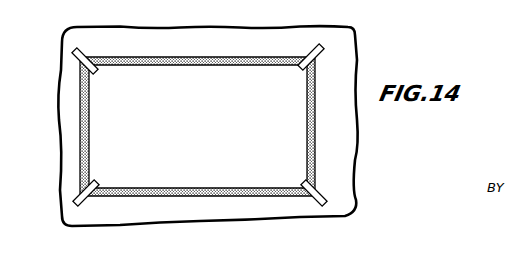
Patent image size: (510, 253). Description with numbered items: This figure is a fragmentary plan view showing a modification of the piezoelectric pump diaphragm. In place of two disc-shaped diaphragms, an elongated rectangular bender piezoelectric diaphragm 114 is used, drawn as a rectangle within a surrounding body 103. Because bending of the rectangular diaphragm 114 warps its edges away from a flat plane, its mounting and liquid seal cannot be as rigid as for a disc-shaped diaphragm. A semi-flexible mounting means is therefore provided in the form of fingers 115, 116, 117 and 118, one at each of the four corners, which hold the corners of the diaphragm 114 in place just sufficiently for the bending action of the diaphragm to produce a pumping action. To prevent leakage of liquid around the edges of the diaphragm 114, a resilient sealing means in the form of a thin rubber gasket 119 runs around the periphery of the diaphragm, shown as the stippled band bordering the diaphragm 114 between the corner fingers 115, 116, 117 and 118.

The sheet 103 is at (62, 117).
The rectangular bender piezoelectric diaphragm 114 is at (222, 125).
The finger 115 is at (88, 58).
The finger 116 is at (313, 61).
The finger 117 is at (315, 188).
The finger 118 is at (86, 203).
The rubber gasket 119 is at (207, 58).